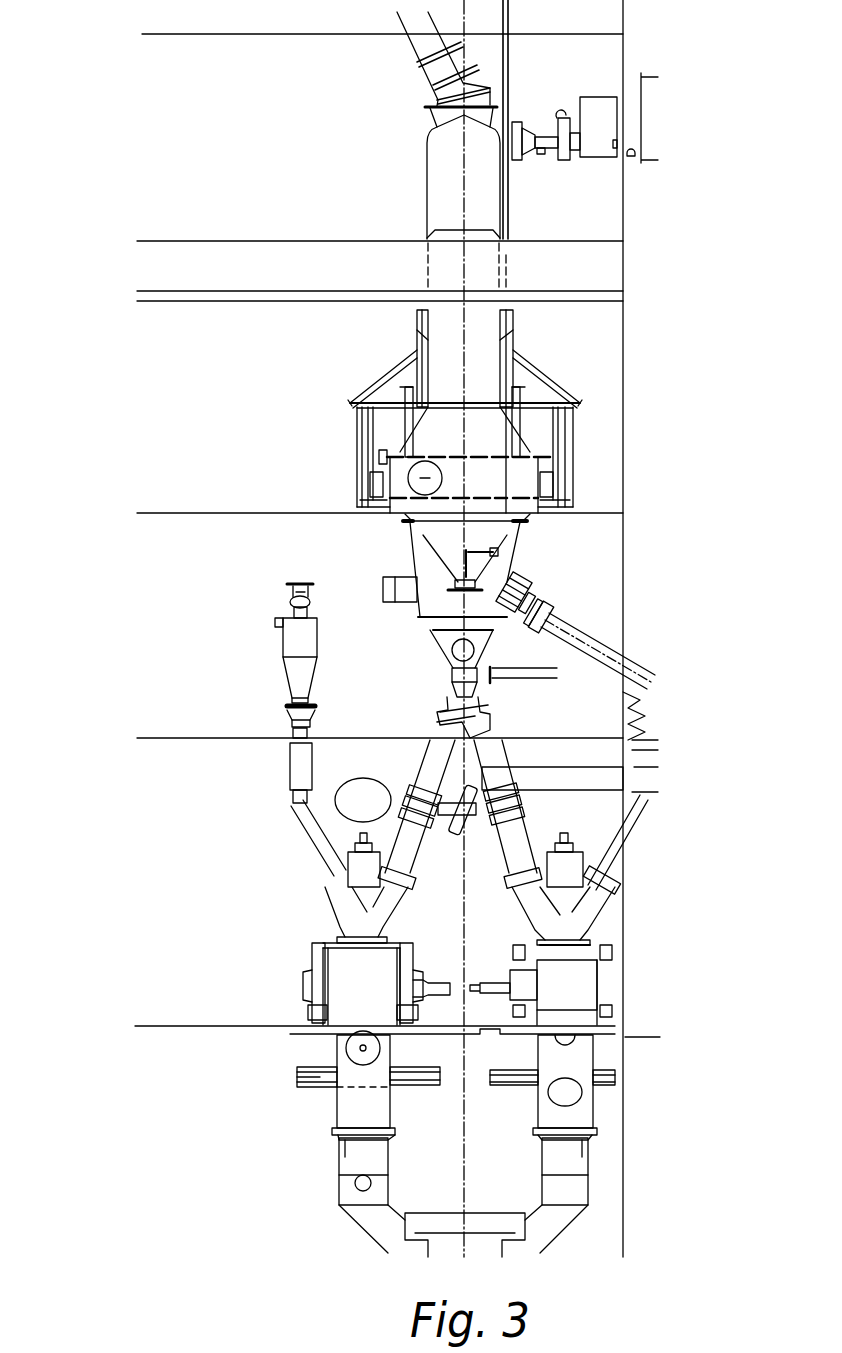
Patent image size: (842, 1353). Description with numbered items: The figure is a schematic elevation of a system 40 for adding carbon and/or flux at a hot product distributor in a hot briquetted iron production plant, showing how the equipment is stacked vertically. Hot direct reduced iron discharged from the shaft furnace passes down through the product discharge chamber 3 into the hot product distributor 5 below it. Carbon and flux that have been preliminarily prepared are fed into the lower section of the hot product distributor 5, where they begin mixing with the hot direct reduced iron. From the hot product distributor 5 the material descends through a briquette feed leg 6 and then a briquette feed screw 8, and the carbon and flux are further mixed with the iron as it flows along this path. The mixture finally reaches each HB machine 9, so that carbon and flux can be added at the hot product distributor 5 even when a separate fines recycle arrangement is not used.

The system 40 is at (108, 118).
The product discharge chamber 3 is at (570, 432).
The hot product distributor 5 is at (503, 641).
The briquette feed leg 6 is at (430, 770).
The briquette feed screw 8 is at (588, 905).
The HB machine 9 is at (578, 986).